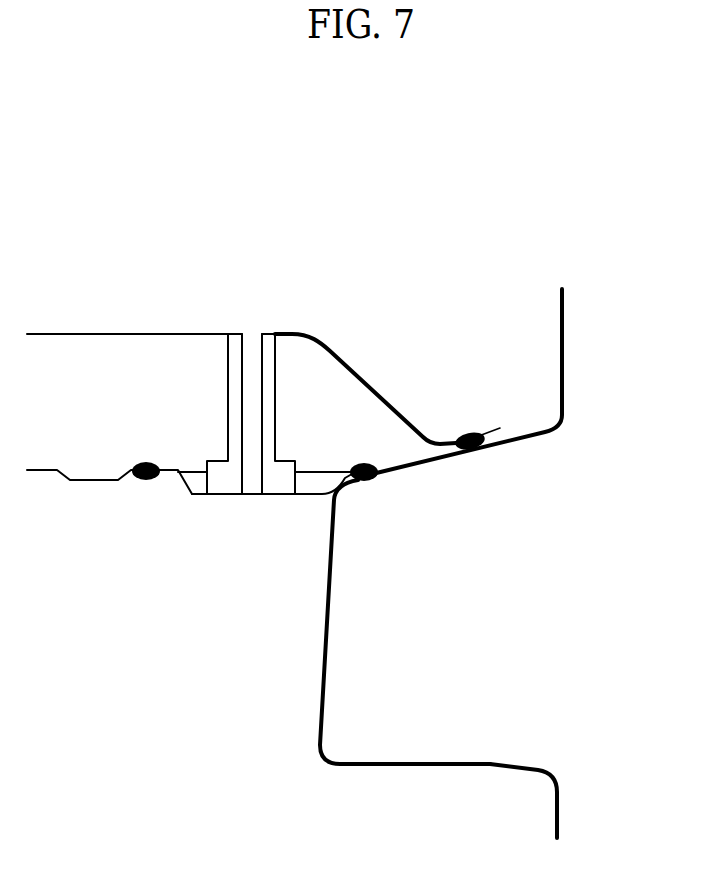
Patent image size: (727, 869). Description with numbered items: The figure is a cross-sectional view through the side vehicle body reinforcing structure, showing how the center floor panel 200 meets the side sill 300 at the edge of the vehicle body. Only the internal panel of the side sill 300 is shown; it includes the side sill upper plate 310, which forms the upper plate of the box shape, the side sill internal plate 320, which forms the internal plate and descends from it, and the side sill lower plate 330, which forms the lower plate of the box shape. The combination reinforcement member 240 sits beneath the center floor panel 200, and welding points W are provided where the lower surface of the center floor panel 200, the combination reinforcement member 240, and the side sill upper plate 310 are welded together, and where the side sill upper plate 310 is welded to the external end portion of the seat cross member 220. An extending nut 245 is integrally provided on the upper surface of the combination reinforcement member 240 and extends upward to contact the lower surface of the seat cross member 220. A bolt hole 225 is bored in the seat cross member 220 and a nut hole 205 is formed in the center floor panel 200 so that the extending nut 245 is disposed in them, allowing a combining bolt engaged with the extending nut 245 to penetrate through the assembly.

The center floor panel 200 is at (94, 481).
The nut hole 205 is at (297, 468).
The seat cross member 220 is at (128, 333).
The bolt hole 225 is at (278, 334).
The combination reinforcement member 240 is at (257, 495).
The extending nut 245 is at (275, 398).
The side sill 300 is at (508, 563).
The side sill upper plate 310 is at (437, 455).
The side sill internal plate 320 is at (327, 622).
The side sill lower plate 330 is at (490, 763).
The welding point W is at (146, 480).